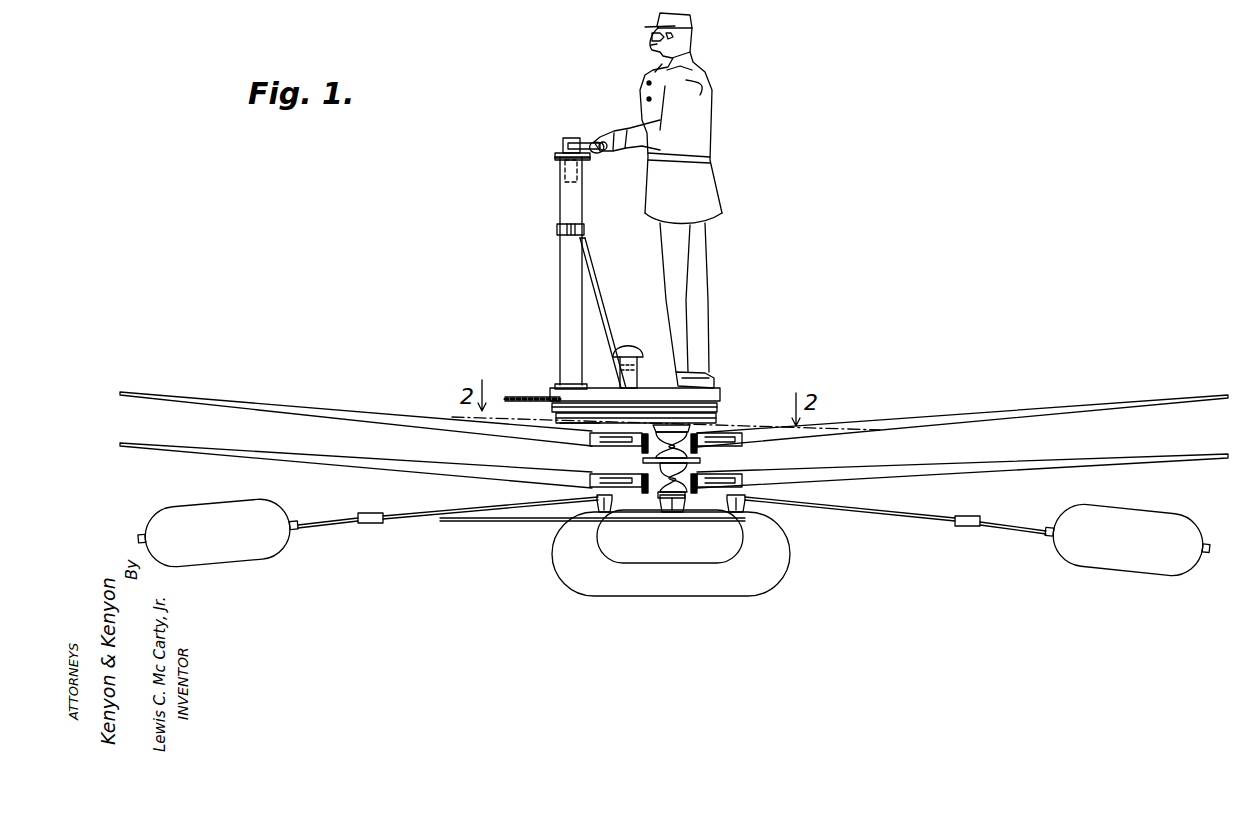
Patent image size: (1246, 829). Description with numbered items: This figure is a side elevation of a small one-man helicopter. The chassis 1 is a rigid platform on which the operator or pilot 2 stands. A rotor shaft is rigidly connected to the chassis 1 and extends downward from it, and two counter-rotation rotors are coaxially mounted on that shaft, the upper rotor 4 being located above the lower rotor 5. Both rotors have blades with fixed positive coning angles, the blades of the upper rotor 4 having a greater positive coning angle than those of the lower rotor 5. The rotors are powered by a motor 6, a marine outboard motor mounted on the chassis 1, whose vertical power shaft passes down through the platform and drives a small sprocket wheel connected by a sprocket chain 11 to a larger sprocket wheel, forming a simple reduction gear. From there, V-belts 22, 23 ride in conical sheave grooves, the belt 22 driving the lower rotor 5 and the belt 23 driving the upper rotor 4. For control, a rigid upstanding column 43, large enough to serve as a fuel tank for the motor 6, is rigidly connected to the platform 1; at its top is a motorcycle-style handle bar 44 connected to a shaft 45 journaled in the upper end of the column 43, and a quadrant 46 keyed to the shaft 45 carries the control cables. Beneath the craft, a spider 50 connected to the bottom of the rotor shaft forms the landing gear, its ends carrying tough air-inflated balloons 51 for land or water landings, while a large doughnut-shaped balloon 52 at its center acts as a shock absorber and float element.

The chassis 1 is at (720, 393).
The operator or pilot 2 is at (705, 182).
The upper rotor 4 is at (953, 415).
The lower rotor 5 is at (959, 472).
The motor 6 is at (633, 345).
The sprocket chain 11 is at (520, 398).
The V-belt 22 is at (725, 410).
The V-belt 23 is at (745, 418).
The column 43 is at (560, 321).
The handle bar 44 is at (578, 146).
The shaft 45 is at (566, 176).
The quadrant 46 is at (561, 157).
The spider 50 is at (482, 512).
The air-inflated balloons 51 is at (248, 545).
The doughnut or biscuit shaped balloon 52 is at (735, 590).